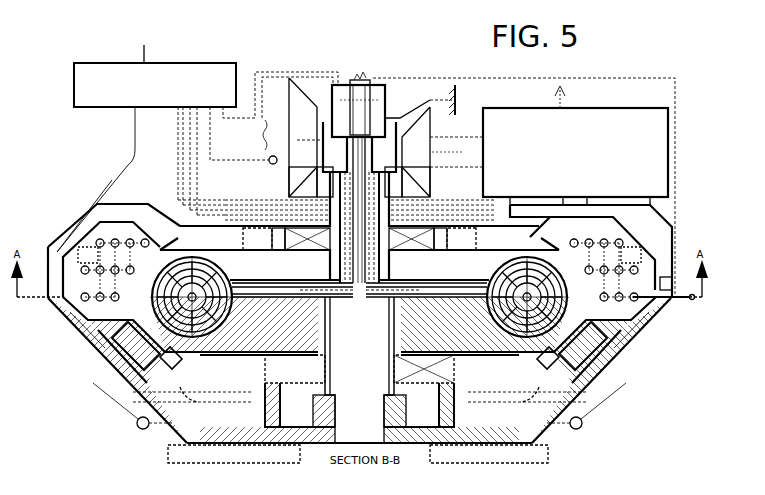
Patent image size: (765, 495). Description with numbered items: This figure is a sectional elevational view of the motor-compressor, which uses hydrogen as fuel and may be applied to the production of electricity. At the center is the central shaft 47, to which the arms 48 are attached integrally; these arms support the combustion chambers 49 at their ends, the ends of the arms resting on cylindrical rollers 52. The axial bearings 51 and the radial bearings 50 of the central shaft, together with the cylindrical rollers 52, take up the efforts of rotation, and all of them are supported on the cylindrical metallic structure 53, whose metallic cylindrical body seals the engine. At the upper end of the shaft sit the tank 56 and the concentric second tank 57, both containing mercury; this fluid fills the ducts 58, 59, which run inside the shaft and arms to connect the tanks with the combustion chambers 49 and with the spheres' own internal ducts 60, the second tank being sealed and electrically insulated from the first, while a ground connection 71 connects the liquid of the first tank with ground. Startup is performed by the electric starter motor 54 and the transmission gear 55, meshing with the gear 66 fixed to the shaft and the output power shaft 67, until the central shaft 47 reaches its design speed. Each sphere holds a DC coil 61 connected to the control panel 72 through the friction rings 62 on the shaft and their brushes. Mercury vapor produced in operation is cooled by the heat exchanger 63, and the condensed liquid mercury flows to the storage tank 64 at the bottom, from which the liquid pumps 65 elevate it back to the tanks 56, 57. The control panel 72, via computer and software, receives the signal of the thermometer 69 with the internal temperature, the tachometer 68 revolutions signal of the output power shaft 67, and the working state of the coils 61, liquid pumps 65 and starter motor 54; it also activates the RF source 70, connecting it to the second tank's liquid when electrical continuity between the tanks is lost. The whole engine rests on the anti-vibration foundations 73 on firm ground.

The central shaft 47 is at (359, 346).
The arms 48 is at (234, 324).
The combustion chambers 49 is at (192, 297).
The radial bearings 50 is at (359, 369).
The axial bearings 51 is at (359, 411).
The cylindrical rollers 52 is at (359, 346).
The cylindrical metallic structure 53 is at (286, 239).
The electric starter motor 54 is at (549, 141).
The transmission gear 55 is at (408, 152).
The tank 56 is at (407, 104).
The second tank 57 is at (366, 85).
The duct 58 is at (437, 298).
The duct 59 is at (267, 290).
The internal ducts 60 is at (119, 270).
The coils 61 is at (517, 297).
The friction rings 62 is at (432, 227).
The heat exchanger 63 is at (608, 270).
The storage tank 64 is at (359, 406).
The liquid pumps 65 is at (359, 414).
The gear 66 is at (311, 182).
The output power shaft 67 is at (293, 137).
The tachometer 68 is at (243, 147).
The thermometer 69 is at (78, 216).
The RF source 70 is at (280, 85).
The ground connection 71 is at (460, 100).
The control panel 72 is at (146, 148).
The anti-vibration foundations 73 is at (358, 455).